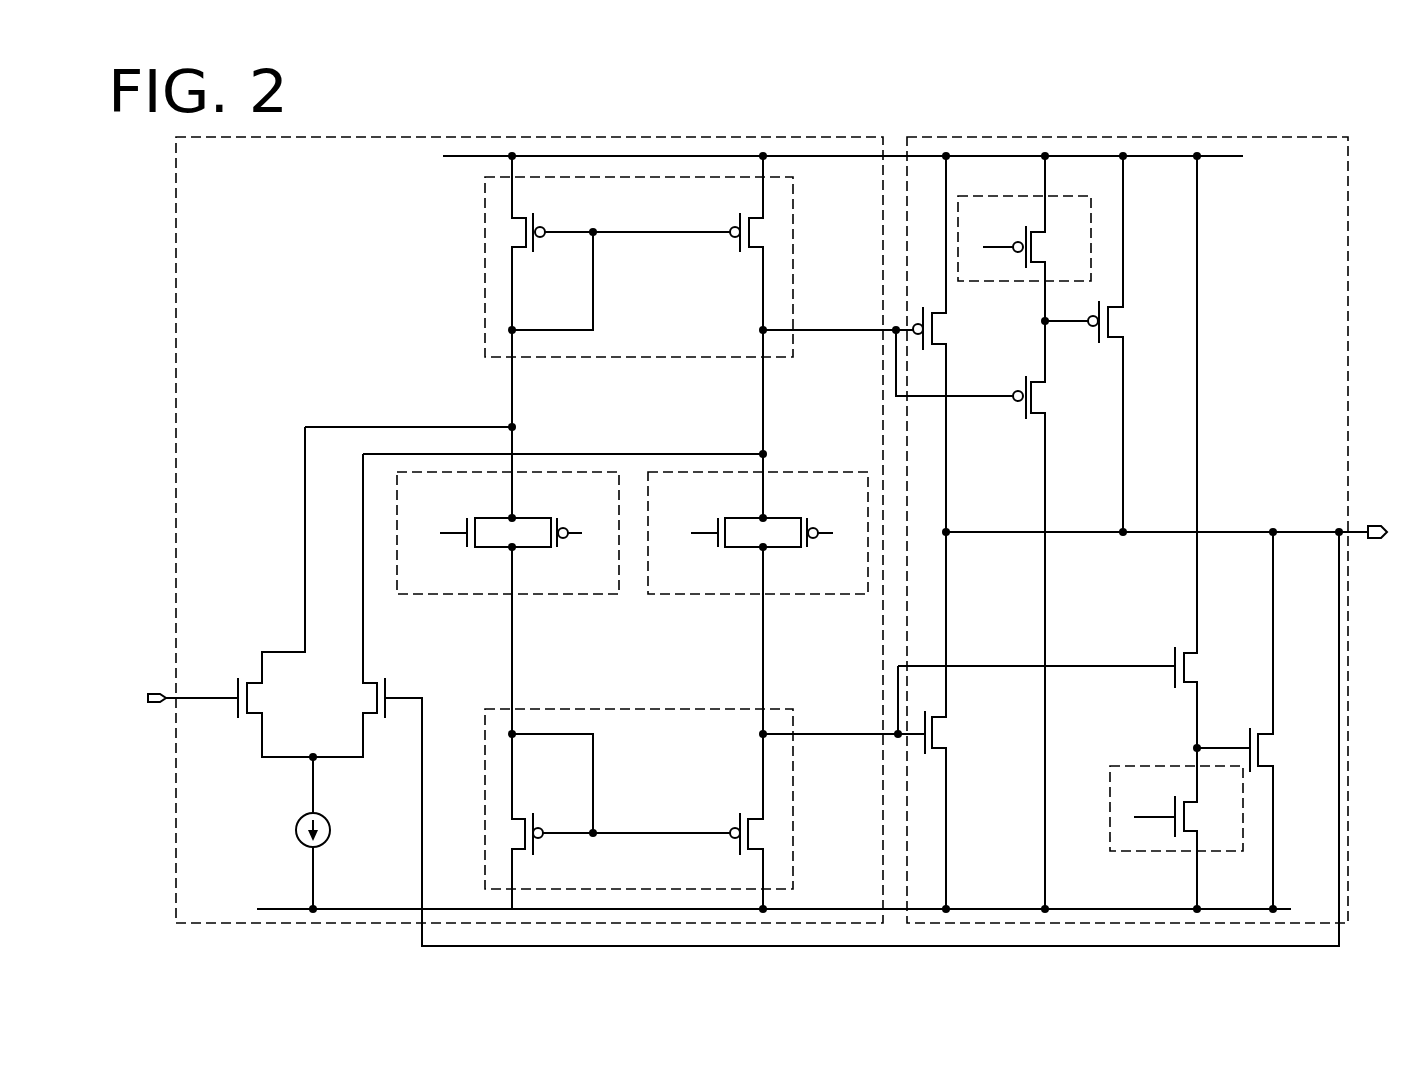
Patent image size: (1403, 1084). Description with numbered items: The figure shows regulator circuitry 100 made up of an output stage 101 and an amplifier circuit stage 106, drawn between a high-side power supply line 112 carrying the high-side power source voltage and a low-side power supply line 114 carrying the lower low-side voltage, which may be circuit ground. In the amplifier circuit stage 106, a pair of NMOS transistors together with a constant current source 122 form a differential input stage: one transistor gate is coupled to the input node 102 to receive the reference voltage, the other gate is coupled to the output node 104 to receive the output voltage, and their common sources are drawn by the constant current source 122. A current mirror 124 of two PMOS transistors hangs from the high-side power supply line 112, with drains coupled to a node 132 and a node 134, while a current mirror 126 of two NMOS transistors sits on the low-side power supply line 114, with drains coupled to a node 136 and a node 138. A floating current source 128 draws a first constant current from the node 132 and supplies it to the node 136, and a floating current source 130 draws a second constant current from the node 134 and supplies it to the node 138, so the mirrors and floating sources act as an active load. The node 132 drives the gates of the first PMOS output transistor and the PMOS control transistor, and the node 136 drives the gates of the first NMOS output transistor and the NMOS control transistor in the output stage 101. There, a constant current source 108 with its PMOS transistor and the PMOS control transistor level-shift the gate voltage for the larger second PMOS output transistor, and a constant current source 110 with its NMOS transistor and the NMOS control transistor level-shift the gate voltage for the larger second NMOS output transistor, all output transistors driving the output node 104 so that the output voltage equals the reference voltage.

The regulator circuitry 100 is at (1224, 118).
The output stage 101 is at (1310, 256).
The input node 102 is at (160, 696).
The output node 104 is at (1380, 527).
The amplifier circuit stage 106 is at (832, 135).
The constant current source 108 is at (1091, 222).
The constant current source 110 is at (1118, 765).
The high-side power supply line 112 is at (464, 158).
The low-side power supply line 114 is at (285, 909).
The constant current source 122 is at (331, 832).
The current mirror 124 is at (793, 218).
The current mirror 126 is at (796, 720).
The floating current source 128 is at (812, 470).
The floating current source 130 is at (560, 470).
The node 132 is at (763, 453).
The node 134 is at (512, 425).
The node 136 is at (763, 736).
The node 138 is at (512, 736).